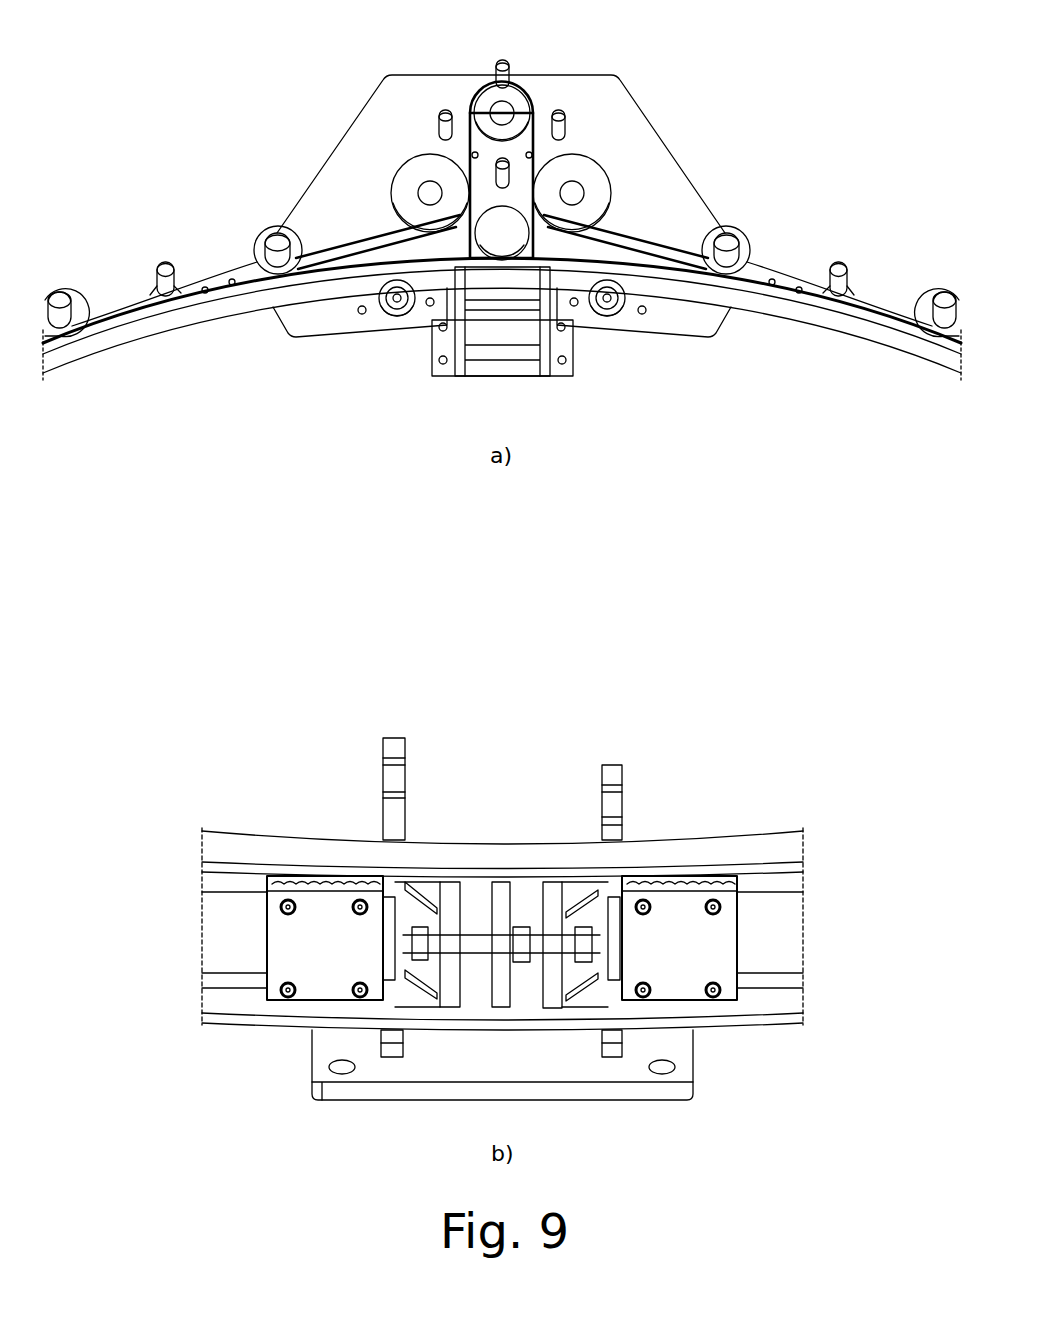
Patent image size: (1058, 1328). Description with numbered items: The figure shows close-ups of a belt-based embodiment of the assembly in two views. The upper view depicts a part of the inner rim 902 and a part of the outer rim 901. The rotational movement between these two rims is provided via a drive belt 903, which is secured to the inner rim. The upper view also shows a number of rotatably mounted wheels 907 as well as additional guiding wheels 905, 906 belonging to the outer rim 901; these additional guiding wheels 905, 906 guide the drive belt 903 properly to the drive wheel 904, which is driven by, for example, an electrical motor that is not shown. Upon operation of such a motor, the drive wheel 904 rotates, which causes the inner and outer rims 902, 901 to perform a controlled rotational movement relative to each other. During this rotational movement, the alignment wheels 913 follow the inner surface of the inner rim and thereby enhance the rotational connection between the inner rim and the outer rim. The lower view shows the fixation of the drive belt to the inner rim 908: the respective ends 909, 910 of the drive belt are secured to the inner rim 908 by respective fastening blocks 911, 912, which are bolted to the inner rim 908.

The outer rim 901 is at (665, 181).
The inner rim 902 is at (857, 332).
The drive belt 903 is at (673, 257).
The drive wheel 904 is at (512, 98).
The additional guiding wheel 905 is at (583, 175).
The additional guiding wheel 906 is at (420, 183).
The rotatably mounted wheel 907 is at (257, 250).
The inner rim 908 is at (717, 848).
The end of drive belt 909 is at (793, 930).
The end of drive belt 910 is at (212, 930).
The fastening block 911 is at (707, 957).
The fastening block 912 is at (297, 957).
The alignment wheel 913 is at (607, 310).